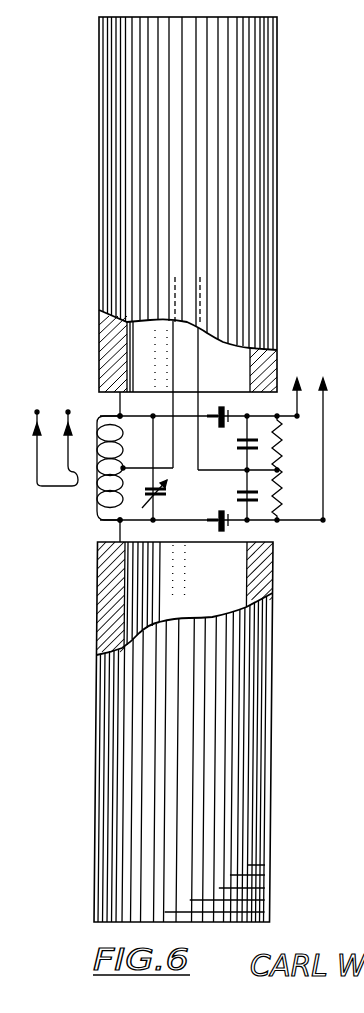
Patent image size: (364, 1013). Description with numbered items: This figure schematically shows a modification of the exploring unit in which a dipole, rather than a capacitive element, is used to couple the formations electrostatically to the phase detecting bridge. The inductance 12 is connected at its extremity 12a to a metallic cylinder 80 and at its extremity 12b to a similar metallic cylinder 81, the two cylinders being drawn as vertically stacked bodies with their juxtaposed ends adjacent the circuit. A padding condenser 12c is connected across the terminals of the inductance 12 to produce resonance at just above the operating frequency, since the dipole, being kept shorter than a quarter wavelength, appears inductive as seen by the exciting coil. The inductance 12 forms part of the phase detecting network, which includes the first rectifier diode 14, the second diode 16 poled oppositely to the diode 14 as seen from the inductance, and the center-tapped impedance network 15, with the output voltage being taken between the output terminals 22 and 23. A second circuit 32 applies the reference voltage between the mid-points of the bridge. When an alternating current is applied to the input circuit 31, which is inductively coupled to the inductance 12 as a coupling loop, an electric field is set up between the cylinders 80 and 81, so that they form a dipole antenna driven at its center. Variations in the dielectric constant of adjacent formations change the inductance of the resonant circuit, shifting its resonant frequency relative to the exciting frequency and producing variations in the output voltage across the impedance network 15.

The metallic cylinder 80 is at (99, 201).
The metallic cylinder 81 is at (99, 741).
The second circuit 32 is at (184, 378).
The inductance 12 is at (122, 440).
The extremity 12a is at (120, 399).
The extremity 12b is at (120, 528).
The padding condenser 12c is at (157, 509).
The first rectifier diode 14 is at (230, 417).
The second diode 16 is at (226, 527).
The center-tapped impedance network 15 is at (292, 427).
The output terminal 22 is at (300, 425).
The output terminal 23 is at (326, 518).
The input circuit 31 is at (48, 486).